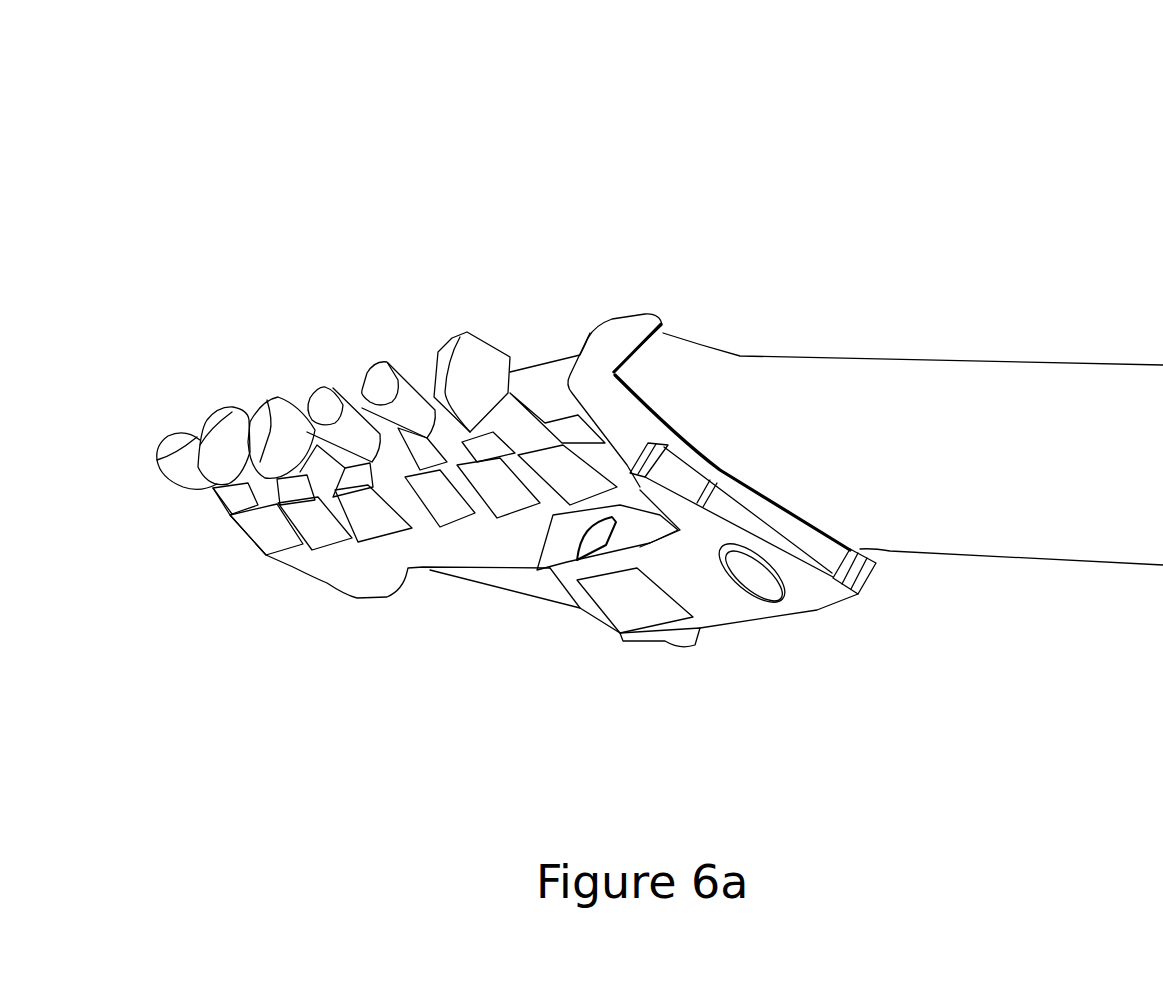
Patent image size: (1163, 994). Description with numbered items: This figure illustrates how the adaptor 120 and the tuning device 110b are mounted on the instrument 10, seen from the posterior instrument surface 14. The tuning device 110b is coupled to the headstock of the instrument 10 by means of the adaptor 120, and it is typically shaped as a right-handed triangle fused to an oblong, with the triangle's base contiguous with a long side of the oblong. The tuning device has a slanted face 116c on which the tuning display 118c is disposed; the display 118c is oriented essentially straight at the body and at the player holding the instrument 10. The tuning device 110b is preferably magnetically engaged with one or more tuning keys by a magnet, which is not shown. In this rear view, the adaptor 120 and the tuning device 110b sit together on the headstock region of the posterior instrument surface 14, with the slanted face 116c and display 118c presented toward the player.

The instrument 10 is at (690, 288).
The posterior instrument surface 14 is at (523, 548).
The slanted face 116c is at (683, 470).
The tuning display 118c is at (765, 516).
The adaptor 120 is at (900, 591).
The tuning device 110b is at (730, 644).